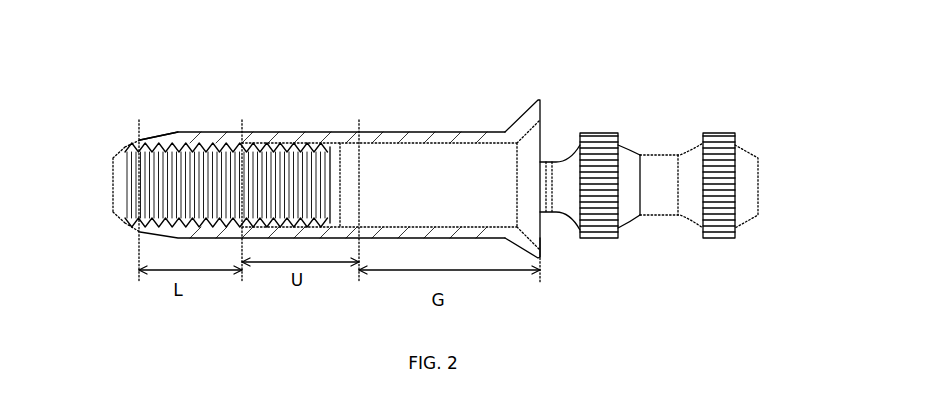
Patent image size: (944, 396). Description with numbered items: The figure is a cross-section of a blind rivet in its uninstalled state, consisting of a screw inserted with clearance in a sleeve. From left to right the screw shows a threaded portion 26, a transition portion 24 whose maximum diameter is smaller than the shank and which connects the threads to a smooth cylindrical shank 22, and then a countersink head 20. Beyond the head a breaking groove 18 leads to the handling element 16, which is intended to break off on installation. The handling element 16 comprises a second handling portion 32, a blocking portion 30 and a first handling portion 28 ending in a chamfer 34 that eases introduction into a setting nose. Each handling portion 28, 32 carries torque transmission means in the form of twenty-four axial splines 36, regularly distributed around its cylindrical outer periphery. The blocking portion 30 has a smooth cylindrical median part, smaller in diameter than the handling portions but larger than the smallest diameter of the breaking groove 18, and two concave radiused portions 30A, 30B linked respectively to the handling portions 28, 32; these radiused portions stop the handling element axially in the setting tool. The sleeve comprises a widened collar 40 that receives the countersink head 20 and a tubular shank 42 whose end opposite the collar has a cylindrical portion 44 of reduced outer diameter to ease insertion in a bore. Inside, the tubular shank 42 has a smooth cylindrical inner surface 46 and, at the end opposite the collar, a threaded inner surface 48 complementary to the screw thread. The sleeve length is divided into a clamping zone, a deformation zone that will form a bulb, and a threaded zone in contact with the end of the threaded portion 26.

The handling element 16 is at (687, 106).
The breaking groove 18 is at (552, 160).
The countersink head 20 is at (540, 235).
The smooth cylindrical shank 22 is at (489, 187).
The transition portion 24 is at (342, 172).
The threaded portion 26 is at (157, 195).
The first handling portion 28 is at (720, 240).
The blocking portion 30 is at (665, 200).
The concave radiused portion 30A is at (692, 207).
The concave radiused portion 30B is at (625, 200).
The second handling portion 32 is at (595, 238).
The chamfer 34 is at (747, 222).
The splines 36 is at (596, 165).
The widened collar 40 is at (540, 115).
The tubular shank 42 is at (383, 137).
The cylindrical portion of reduced outer diameter 44 is at (162, 137).
The smooth cylindrical inner surface 46 is at (418, 145).
The threaded inner surface 48 is at (187, 147).